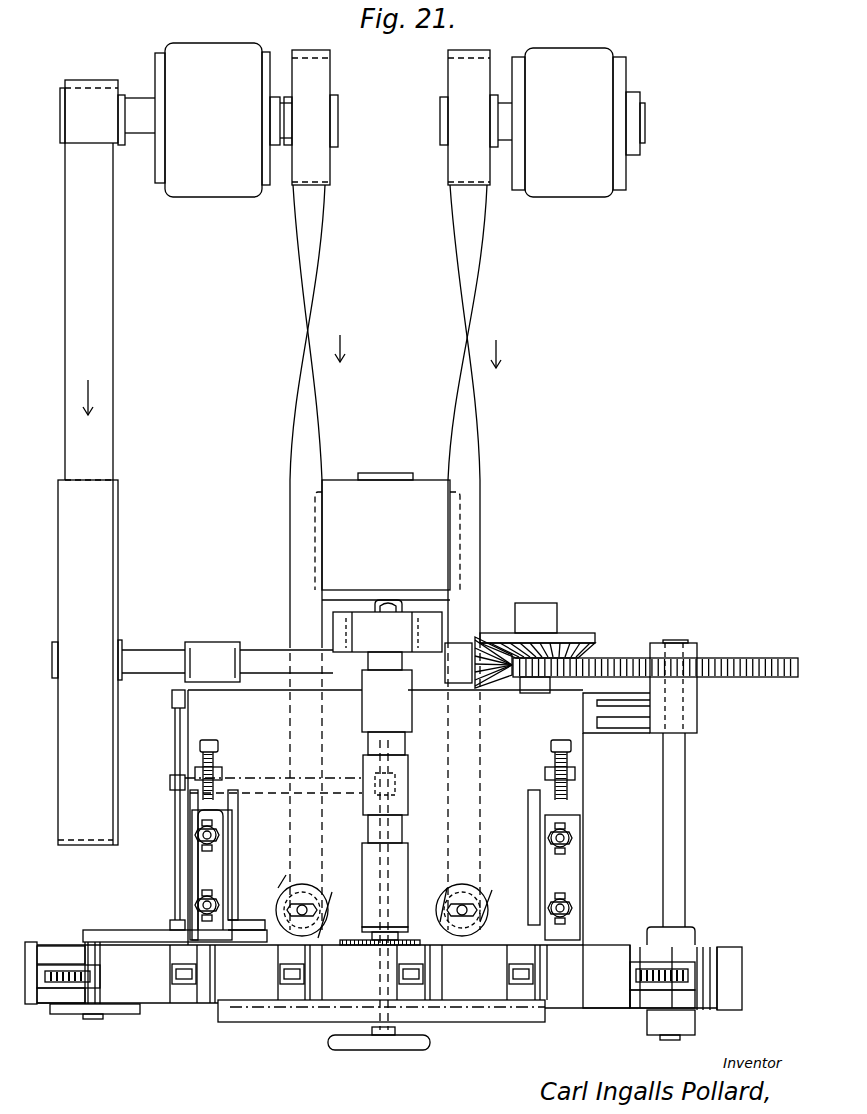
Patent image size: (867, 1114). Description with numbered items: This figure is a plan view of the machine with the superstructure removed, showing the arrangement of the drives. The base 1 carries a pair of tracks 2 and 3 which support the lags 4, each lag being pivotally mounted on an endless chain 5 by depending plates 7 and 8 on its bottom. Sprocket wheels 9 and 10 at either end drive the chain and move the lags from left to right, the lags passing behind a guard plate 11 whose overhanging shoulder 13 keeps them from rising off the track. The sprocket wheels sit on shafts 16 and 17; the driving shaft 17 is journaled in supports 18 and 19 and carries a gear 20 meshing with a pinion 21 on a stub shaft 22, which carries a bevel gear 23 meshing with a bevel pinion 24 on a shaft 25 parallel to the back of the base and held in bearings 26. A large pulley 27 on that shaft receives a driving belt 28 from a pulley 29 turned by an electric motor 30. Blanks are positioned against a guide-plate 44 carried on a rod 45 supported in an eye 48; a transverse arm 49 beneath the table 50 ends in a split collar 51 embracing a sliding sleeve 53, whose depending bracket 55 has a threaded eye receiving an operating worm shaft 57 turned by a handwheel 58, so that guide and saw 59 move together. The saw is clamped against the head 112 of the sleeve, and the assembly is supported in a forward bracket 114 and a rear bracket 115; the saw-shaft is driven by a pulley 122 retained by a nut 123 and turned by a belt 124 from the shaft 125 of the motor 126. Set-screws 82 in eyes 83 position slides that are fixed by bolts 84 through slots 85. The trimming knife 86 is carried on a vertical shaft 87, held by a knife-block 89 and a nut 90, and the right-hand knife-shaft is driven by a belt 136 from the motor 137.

The base 1 is at (255, 915).
The track 2 is at (65, 1000).
The track 3 is at (62, 947).
The lag 4 is at (30, 946).
The endless chain 5 is at (82, 975).
The depending plate 7 is at (48, 992).
The depending plate 8 is at (42, 965).
The sprocket wheel 9 is at (655, 960).
The sprocket wheel 10 is at (86, 983).
The guard plate 11 is at (290, 1023).
The overhanging shoulder 13 is at (253, 1002).
The shaft 16 is at (96, 1016).
The driving shaft 17 is at (679, 876).
The support 18 is at (690, 930).
The support 19 is at (690, 714).
The gear 20 is at (623, 658).
The pinion 21 is at (538, 694).
The stub shaft 22 is at (532, 682).
The bevel gear 23 is at (575, 638).
The bevel gear or pinion 24 is at (498, 686).
The shaft 25 is at (252, 650).
The bearing 26 is at (196, 644).
The large pulley 27 is at (115, 590).
The driving belt 28 is at (113, 365).
The pulley 29 is at (122, 90).
The electric motor 30 is at (210, 56).
The guide-plate 44 is at (127, 931).
The rod 45 is at (175, 735).
The bearing or eye 48 is at (172, 702).
The transverse arm 49 is at (170, 780).
The table 50 is at (272, 697).
The split collar 51 is at (400, 768).
The sliding sleeve 53 is at (368, 741).
The downwardly extending arm or bracket 55 is at (396, 782).
The operating worm shaft 57 is at (390, 748).
The handwheel 58 is at (332, 1041).
The saw 59 is at (367, 945).
The set-screw 82 is at (240, 746).
The eye 83 is at (222, 773).
The bolt 84 is at (216, 835).
The slot 85 is at (215, 848).
The knife 86 is at (280, 889).
The vertical shaft 87 is at (303, 900).
The knife-block 89 is at (311, 902).
The nut 90 is at (312, 908).
The head 112 is at (364, 934).
The bracket 114 is at (400, 886).
The bracket 115 is at (382, 672).
The pulley 122 is at (372, 612).
The nut 123 is at (386, 604).
The belt 124 is at (358, 630).
The shaft 125 is at (398, 603).
The motor 126 is at (398, 496).
The belt 136 is at (481, 318).
The motor 137 is at (583, 176).